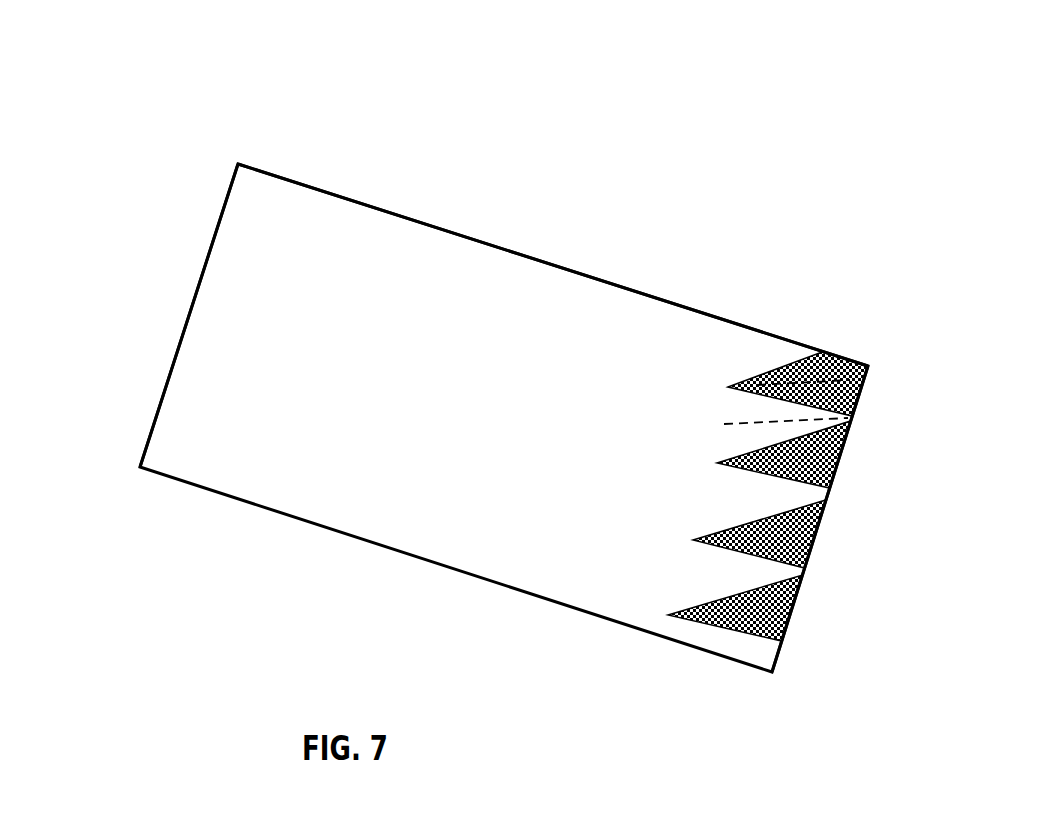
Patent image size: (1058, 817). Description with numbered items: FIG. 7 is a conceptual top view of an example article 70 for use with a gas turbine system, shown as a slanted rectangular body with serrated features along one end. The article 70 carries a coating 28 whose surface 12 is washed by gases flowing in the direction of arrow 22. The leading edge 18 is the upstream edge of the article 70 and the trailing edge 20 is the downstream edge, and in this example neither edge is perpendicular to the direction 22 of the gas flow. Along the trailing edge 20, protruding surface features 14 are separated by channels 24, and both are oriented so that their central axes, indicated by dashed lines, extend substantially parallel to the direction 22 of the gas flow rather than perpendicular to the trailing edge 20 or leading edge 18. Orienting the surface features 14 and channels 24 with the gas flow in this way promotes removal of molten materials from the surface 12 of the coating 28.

The surface 12 is at (232, 230).
The protruding surface features 14 is at (812, 373).
The leading edge 18 is at (132, 397).
The trailing edge 20 is at (890, 395).
The direction of gas flow 22 is at (453, 416).
The channels 24 is at (760, 413).
The coating 28 is at (485, 246).
The article 70 is at (778, 56).